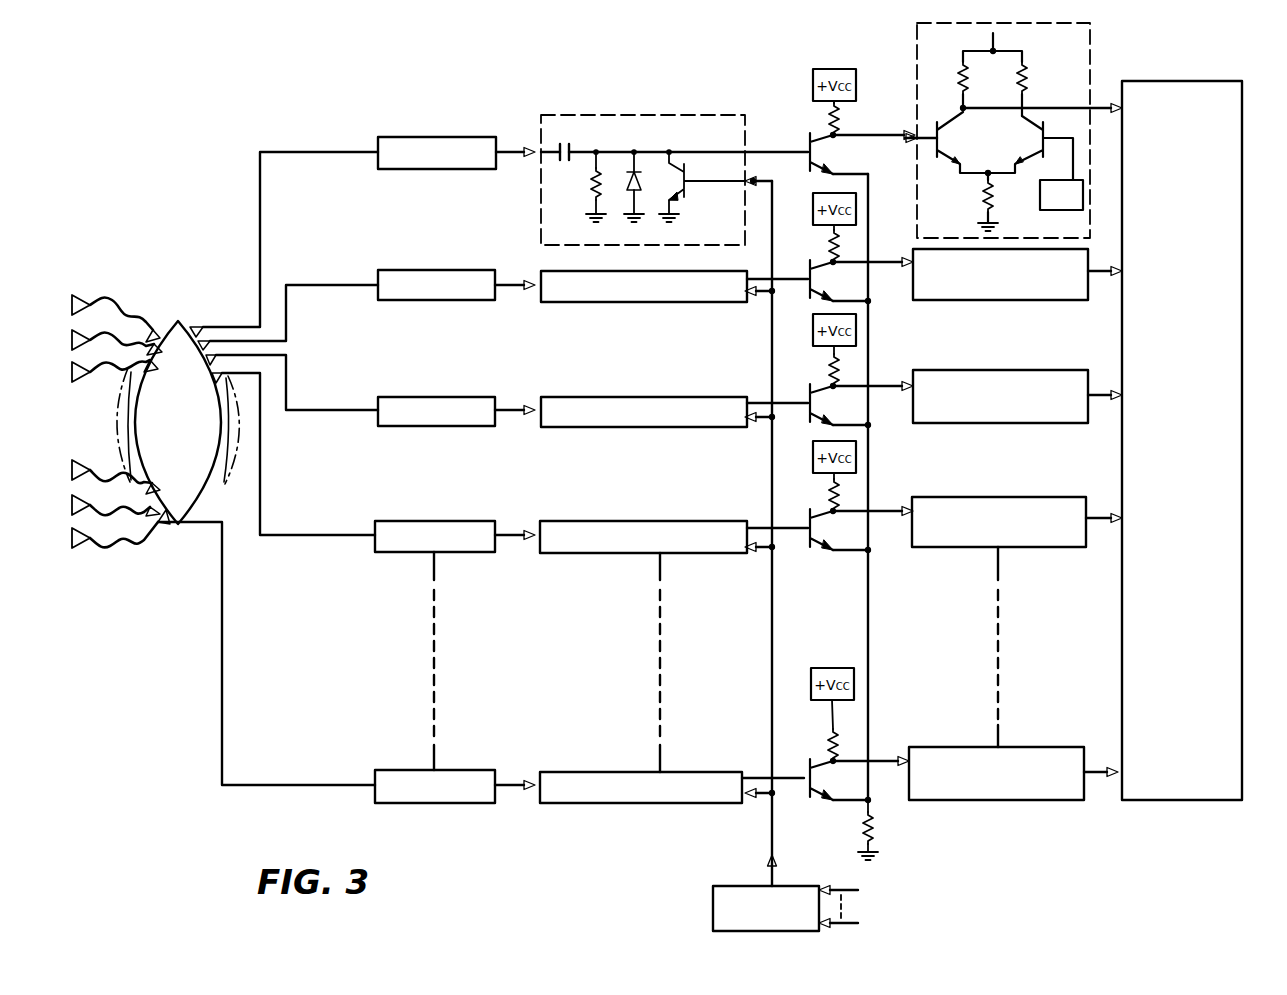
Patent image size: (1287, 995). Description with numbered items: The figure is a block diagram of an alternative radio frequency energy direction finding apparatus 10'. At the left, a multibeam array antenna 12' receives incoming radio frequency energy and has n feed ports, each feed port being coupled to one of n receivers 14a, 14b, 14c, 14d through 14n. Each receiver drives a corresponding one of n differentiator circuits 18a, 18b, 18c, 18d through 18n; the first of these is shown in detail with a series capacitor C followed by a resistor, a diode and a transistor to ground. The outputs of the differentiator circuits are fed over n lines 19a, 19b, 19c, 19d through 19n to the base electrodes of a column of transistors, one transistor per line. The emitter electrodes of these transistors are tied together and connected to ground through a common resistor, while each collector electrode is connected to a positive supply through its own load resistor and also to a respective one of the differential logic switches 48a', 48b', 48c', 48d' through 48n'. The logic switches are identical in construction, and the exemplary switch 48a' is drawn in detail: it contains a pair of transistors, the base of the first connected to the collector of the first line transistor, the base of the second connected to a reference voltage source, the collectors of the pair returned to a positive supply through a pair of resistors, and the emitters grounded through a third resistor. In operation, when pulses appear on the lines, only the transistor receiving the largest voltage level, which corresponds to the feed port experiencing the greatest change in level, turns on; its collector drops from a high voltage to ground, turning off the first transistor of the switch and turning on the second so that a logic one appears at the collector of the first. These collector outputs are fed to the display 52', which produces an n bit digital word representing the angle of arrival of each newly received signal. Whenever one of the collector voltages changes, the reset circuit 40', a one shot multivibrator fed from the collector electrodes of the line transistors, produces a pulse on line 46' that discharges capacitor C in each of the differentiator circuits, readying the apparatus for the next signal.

The radio frequency energy direction finding apparatus 10' is at (526, 50).
The multibeam array antenna 12' is at (155, 390).
The receiver 14a is at (436, 137).
The receiver 14b is at (430, 270).
The receiver 14c is at (410, 397).
The receiver 14d is at (400, 521).
The receiver 14n is at (430, 770).
The differentiator circuit 18a is at (622, 115).
The differentiator circuit 18b is at (655, 302).
The differentiator circuit 18c is at (644, 397).
The differentiator circuit 18d is at (644, 521).
The differentiator circuit 18n is at (580, 772).
The line 19a is at (795, 138).
The line 19b is at (790, 278).
The line 19c is at (790, 402).
The line 19d is at (790, 526).
The line 19n is at (788, 776).
The differential logic switch 48a' is at (1028, 130).
The differential logic switch 48b' is at (1017, 290).
The differential logic switch 48c' is at (1017, 416).
The differential logic switch 48d' is at (1017, 622).
The differential logic switch 48n' is at (1013, 755).
The display 52' is at (1182, 426).
The line 46' is at (781, 532).
The reset circuit 40' is at (921, 891).